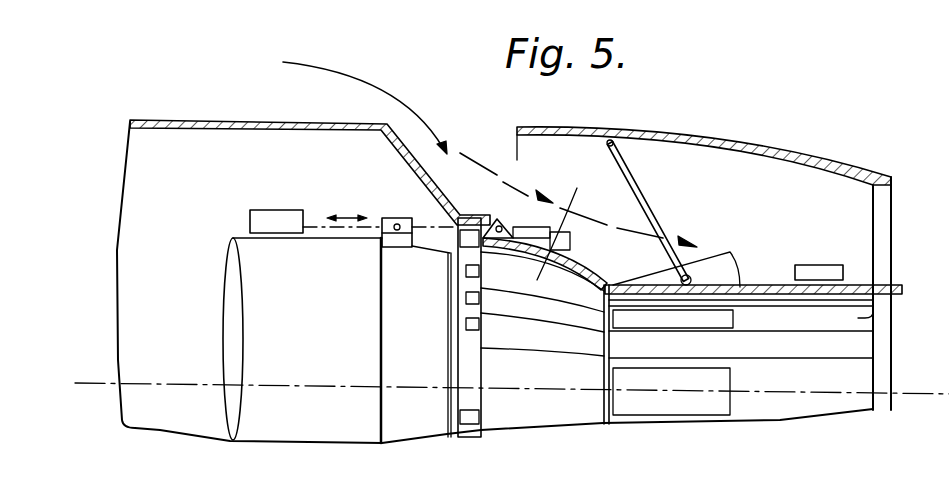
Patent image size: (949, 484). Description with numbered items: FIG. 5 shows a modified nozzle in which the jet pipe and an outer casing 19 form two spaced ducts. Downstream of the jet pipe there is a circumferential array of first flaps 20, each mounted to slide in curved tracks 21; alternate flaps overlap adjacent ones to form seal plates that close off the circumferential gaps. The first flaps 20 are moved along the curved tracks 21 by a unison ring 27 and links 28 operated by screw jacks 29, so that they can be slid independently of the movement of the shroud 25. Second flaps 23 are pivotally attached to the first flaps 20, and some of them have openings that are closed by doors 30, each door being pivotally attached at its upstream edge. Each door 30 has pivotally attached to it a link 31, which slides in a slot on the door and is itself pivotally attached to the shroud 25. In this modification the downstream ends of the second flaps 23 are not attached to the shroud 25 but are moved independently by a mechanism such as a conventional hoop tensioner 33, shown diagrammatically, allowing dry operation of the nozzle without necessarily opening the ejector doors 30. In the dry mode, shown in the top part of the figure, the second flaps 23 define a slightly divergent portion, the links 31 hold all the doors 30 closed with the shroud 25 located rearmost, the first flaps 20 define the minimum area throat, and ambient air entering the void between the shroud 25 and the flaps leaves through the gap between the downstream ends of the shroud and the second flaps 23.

The outer casing 19 is at (301, 131).
The first flaps 20 is at (480, 257).
The curved tracks 21 is at (537, 223).
The second flaps 23 is at (890, 316).
The shroud 25 is at (667, 133).
The unison ring 27 is at (400, 217).
The links 28 is at (428, 222).
The screw jacks 29 is at (273, 217).
The doors 30 is at (698, 291).
The link 31 is at (640, 190).
The hoop tensioner 33 is at (810, 265).